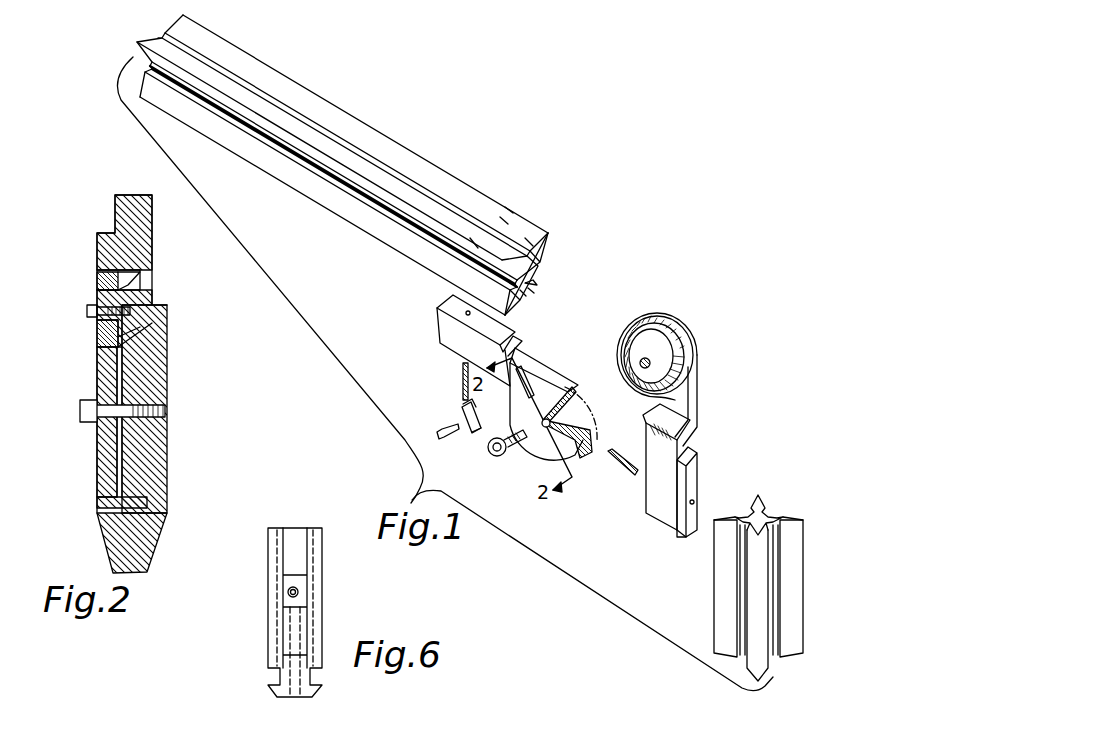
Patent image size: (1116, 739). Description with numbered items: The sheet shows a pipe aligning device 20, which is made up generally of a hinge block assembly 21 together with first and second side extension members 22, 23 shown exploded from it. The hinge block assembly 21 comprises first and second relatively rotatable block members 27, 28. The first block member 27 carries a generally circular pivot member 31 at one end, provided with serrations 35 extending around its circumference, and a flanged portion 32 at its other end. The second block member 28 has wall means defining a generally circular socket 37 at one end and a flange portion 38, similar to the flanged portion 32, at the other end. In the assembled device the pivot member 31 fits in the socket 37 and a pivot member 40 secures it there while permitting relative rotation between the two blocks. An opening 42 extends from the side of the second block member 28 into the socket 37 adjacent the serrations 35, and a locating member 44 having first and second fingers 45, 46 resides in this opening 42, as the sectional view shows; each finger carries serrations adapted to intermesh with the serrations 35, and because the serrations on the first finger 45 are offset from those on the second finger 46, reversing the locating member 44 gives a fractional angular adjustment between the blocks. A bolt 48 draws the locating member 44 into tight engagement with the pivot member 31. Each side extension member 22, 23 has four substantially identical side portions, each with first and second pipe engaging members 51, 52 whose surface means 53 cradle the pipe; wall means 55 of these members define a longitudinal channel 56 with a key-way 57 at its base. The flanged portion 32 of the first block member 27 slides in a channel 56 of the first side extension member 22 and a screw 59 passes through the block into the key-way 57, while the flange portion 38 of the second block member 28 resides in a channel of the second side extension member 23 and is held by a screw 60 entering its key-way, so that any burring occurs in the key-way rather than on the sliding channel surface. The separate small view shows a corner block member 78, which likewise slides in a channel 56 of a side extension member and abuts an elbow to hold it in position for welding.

In FIG. 1, the aligning device 20 is at (618, 232).
In FIG. 1, the hinge block assembly 21 is at (574, 352).
In FIG. 1, the first side extension member 22 is at (717, 592).
In FIG. 1, the second side extension member 23 is at (402, 143).
In FIG. 1, the first block member 27 is at (697, 413).
In FIG. 2, the first block member 27 is at (165, 537).
In FIG. 1, the second block member 28 is at (447, 330).
In FIG. 2, the second block member 28 is at (97, 248).
In FIG. 1, the pivot member 31 is at (675, 348).
In FIG. 2, the pivot member 31 is at (137, 388).
In FIG. 1, the flanged portion 32 is at (682, 530).
In FIG. 1, the serrations 35 is at (657, 333).
In FIG. 2, the serrations 35 is at (127, 340).
In FIG. 1, the socket 37 is at (587, 417).
In FIG. 2, the socket 37 is at (97, 440).
In FIG. 1, the flange portion 38 is at (440, 303).
In FIG. 1, the pivot member 40 is at (500, 455).
In FIG. 2, the pivot member 40 is at (80, 405).
In FIG. 1, the opening 42 is at (523, 385).
In FIG. 2, the opening 42 is at (97, 362).
In FIG. 1, the locating member 44 is at (462, 413).
In FIG. 2, the locating member 44 is at (97, 290).
In FIG. 1, the first finger 45 is at (480, 427).
In FIG. 2, the first finger 45 is at (97, 337).
In FIG. 1, the second finger 46 is at (468, 405).
In FIG. 2, the second finger 46 is at (97, 280).
In FIG. 1, the bolt 48 is at (447, 433).
In FIG. 2, the bolt 48 is at (87, 311).
In FIG. 1, the first pipe engaging member 51 is at (505, 207).
In FIG. 1, the second pipe engaging member 52 is at (473, 247).
In FIG. 1, the surface means 53 is at (498, 217).
In FIG. 1, the wall means 55 is at (533, 283).
In FIG. 1, the channel 56 is at (523, 293).
In FIG. 1, the key-way 57 is at (530, 290).
In FIG. 1, the screw 59 is at (612, 456).
In FIG. 1, the screw 60 is at (463, 365).
In FIG. 6, the corner block member 78 is at (303, 618).